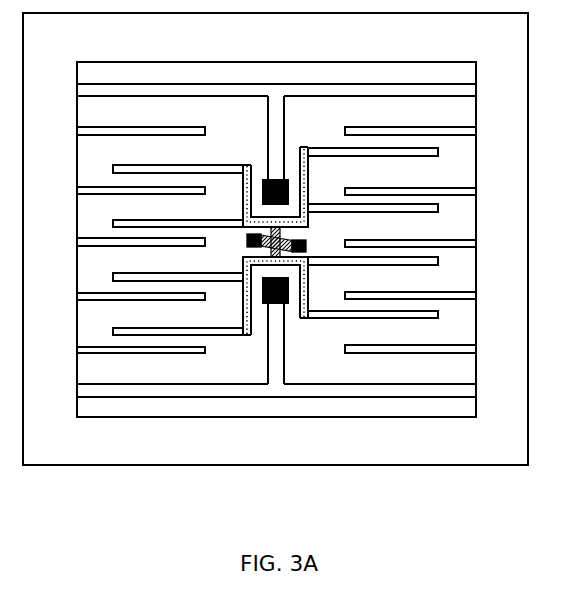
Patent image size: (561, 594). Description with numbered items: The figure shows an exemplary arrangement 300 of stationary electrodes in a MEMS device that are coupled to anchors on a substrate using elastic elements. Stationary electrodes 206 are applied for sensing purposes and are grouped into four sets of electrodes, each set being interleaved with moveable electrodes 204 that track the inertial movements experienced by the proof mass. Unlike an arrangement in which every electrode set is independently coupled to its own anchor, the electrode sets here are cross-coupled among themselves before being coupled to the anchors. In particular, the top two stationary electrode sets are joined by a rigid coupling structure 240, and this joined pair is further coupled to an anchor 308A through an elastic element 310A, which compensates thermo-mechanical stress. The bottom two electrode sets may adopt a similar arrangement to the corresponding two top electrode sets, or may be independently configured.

The arrangement 300 is at (275, 266).
The moveable electrodes 204 is at (368, 126).
The stationary electrodes 206 is at (187, 165).
The coupling structure 240 is at (303, 192).
The anchor 308A is at (247, 241).
The elastic element 310A is at (294, 241).